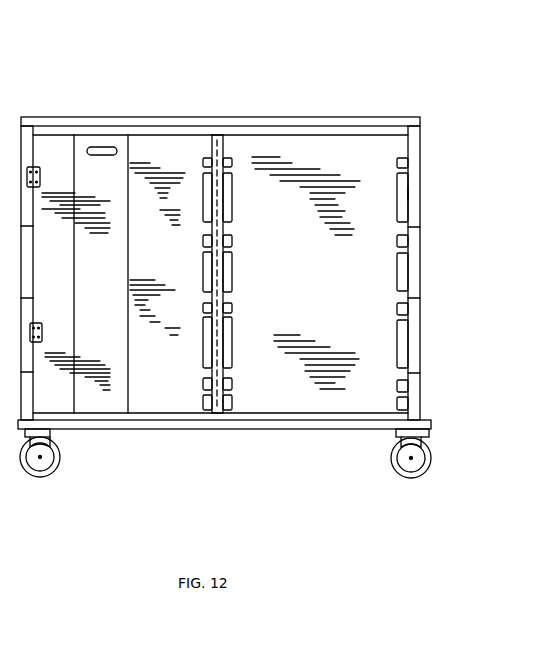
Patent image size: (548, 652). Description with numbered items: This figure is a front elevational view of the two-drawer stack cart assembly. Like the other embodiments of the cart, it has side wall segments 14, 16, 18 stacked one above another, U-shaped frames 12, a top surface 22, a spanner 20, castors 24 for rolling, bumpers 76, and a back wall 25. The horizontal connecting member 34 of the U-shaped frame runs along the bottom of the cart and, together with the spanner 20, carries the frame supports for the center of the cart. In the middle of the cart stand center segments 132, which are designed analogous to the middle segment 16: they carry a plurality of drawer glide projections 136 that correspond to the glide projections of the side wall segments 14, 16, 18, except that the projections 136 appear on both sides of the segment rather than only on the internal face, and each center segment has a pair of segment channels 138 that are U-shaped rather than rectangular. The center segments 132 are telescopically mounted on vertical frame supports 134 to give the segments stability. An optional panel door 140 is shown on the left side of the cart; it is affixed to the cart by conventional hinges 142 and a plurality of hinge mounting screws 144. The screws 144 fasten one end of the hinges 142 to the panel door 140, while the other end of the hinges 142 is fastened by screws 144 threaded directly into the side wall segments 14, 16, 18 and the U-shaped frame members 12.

The U-shaped frame 12 is at (99, 293).
The side wall segment 14 is at (417, 402).
The middle segment 16 is at (412, 327).
The side wall segment 18 is at (420, 147).
The spanner 20 is at (220, 91).
The top surface 22 is at (220, 101).
The castors 24 is at (225, 486).
The back wall 25 is at (385, 186).
The horizontal connecting member 34 is at (224, 453).
The bumpers 76 is at (227, 469).
The center segments 132 is at (267, 238).
The vertical frame supports 134 is at (276, 214).
The drawer glide projections 136 is at (268, 306).
The segment channel 138 is at (440, 375).
The panel door 140 is at (113, 245).
The hinges 142 is at (107, 267).
The hinge mounting screws 144 is at (42, 328).